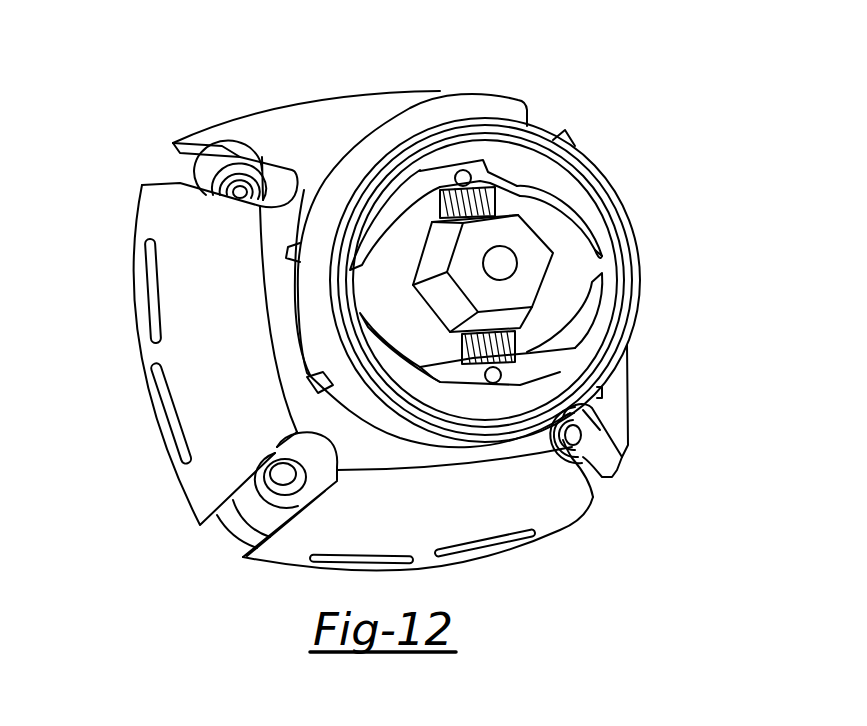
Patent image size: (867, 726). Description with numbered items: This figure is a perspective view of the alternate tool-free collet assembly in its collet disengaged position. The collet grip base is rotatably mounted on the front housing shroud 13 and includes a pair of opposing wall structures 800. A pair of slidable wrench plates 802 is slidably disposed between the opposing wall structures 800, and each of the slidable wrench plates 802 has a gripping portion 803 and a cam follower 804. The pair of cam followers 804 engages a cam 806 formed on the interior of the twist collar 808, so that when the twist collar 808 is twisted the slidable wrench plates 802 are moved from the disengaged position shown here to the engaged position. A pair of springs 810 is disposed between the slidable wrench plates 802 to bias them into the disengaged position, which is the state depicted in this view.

The front housing shroud 13 is at (165, 203).
The opposing wall structures 800 is at (452, 172).
The slidable wrench plates 802 is at (363, 296).
The gripping portion 803 is at (428, 238).
The cam follower 804 is at (360, 278).
The cam 806 is at (560, 192).
The twist collar 808 is at (410, 422).
The springs 810 is at (497, 200).